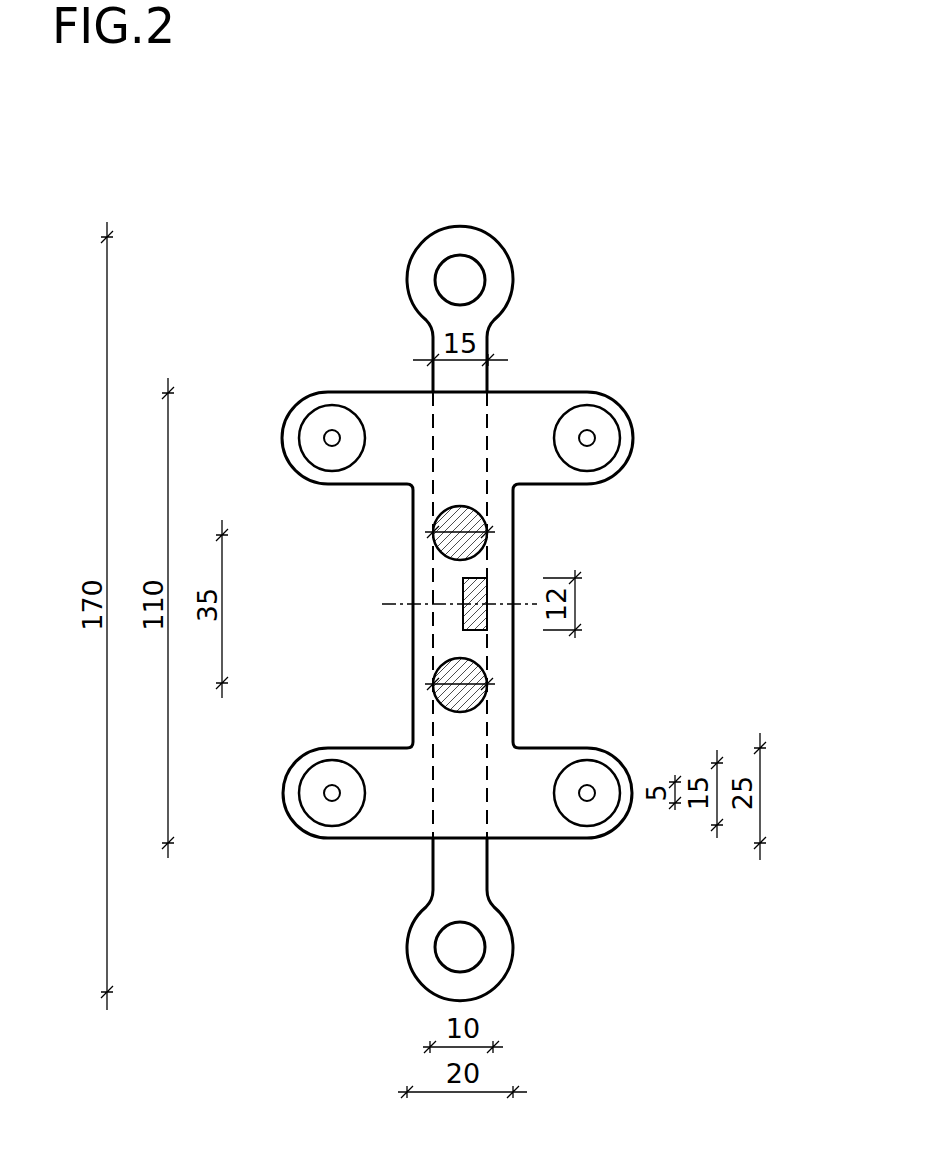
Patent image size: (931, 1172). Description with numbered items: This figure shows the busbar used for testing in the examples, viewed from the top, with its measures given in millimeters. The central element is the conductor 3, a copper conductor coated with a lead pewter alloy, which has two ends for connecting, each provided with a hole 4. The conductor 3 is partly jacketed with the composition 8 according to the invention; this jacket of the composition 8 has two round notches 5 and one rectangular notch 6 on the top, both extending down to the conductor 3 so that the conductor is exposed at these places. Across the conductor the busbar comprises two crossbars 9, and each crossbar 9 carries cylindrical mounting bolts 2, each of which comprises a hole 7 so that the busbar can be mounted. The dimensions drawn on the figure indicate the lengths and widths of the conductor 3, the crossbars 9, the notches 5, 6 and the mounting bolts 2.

The cylindrical mounting bolt 2 is at (580, 770).
The conductor 3 is at (503, 297).
The hole 4 is at (467, 278).
The round notch 5 is at (490, 550).
The rectangular notch 6 is at (488, 592).
The hole 7 is at (590, 790).
The composition 8 is at (422, 593).
The crossbar 9 is at (556, 466).